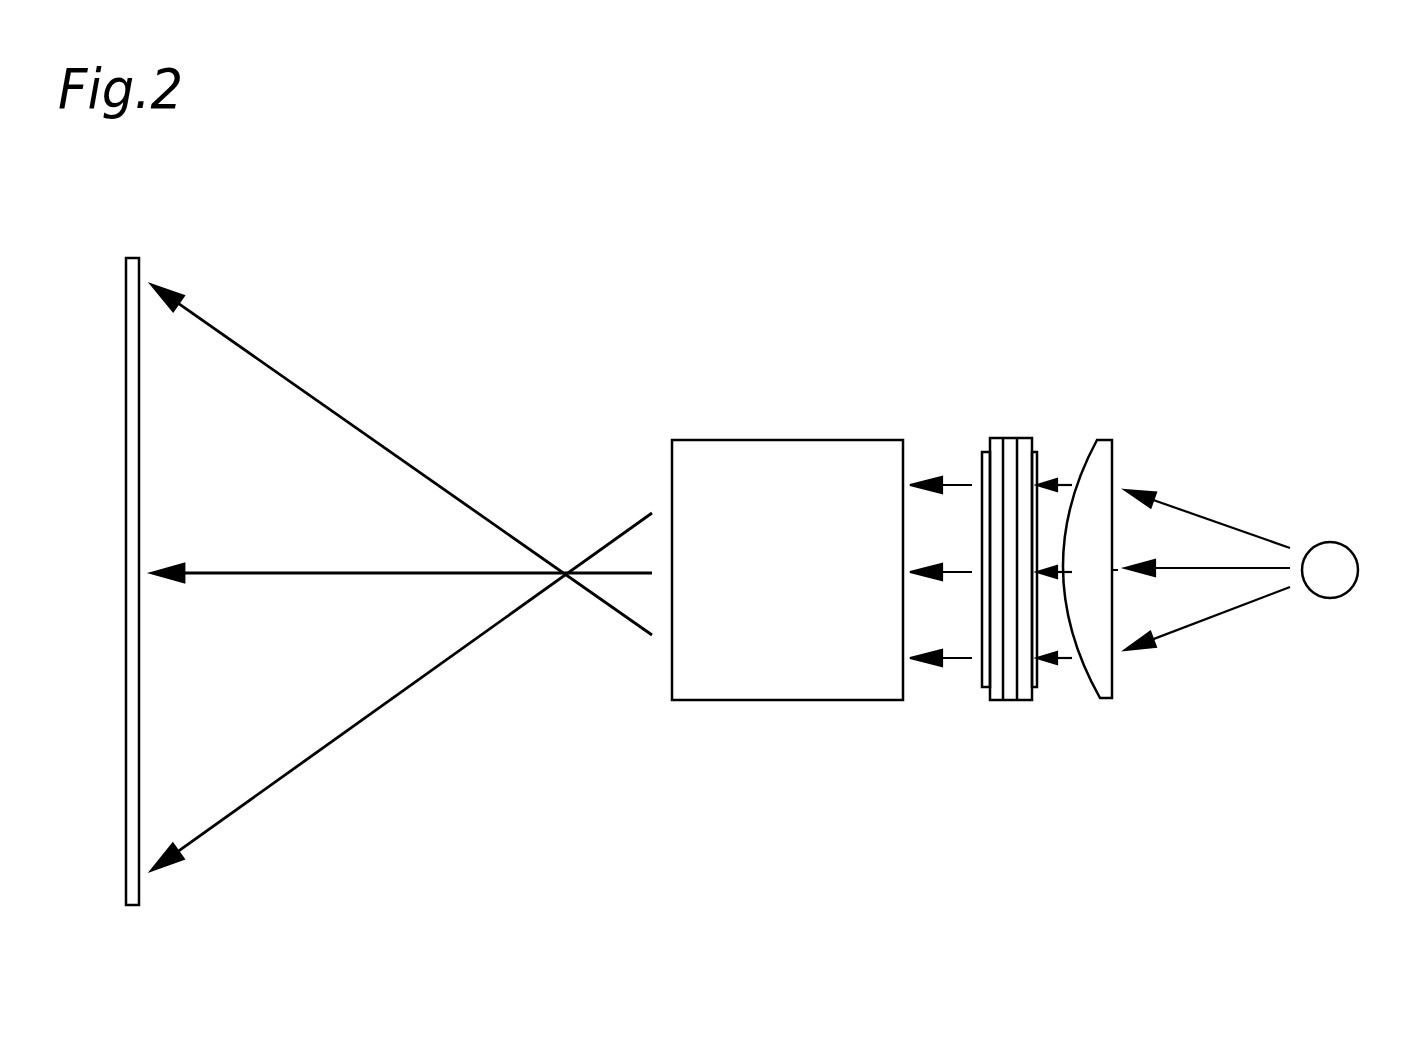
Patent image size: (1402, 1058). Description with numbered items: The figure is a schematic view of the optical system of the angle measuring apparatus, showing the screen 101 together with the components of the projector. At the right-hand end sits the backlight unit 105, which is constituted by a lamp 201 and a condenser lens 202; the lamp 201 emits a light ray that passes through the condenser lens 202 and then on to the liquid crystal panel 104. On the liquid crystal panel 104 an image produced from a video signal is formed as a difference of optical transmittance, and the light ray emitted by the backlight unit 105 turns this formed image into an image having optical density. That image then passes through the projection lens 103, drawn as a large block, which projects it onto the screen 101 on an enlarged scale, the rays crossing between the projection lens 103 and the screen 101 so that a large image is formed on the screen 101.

The screen 101 is at (128, 263).
The projection lens 103 is at (793, 440).
The liquid crystal panel 104 is at (1043, 425).
The backlight unit 105 is at (1223, 488).
The lamp 201 is at (1342, 525).
The condenser lens 202 is at (1097, 438).